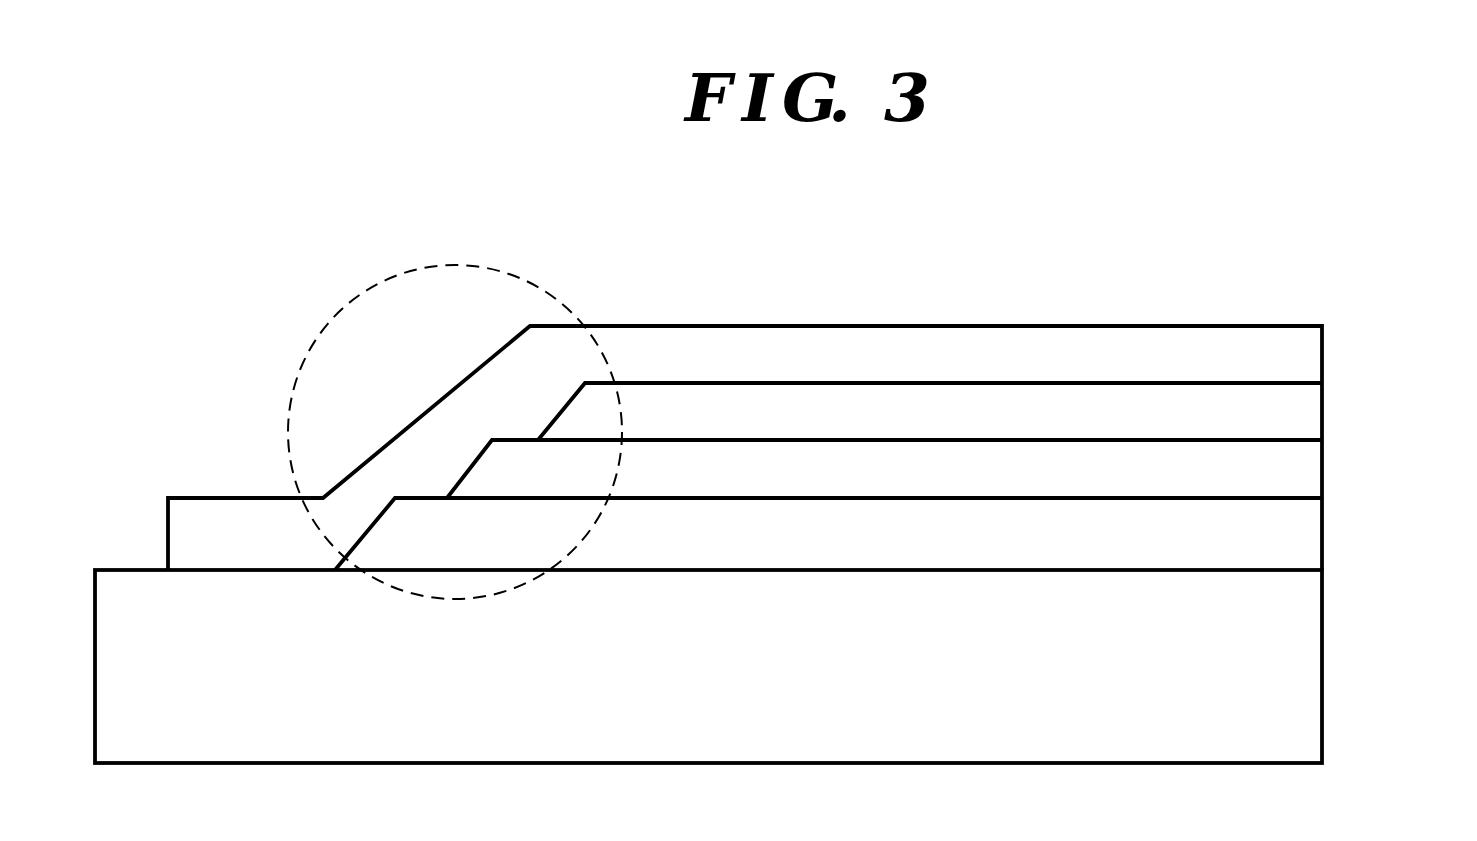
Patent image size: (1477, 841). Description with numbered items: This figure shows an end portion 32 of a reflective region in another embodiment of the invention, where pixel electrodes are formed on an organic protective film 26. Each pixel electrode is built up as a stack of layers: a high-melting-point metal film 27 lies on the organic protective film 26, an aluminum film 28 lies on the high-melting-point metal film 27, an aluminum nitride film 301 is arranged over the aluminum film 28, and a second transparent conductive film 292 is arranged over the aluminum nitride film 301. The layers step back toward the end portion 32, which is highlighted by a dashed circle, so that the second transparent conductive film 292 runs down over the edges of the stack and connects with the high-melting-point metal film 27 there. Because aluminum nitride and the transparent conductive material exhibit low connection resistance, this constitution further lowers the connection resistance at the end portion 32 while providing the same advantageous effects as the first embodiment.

The organic protective film 26 is at (1278, 682).
The high-melting-point metal film 27 is at (1288, 528).
The aluminum film 28 is at (1285, 472).
The aluminum nitride film 301 is at (1288, 415).
The second transparent conductive film 292 is at (1297, 355).
The end portion 32 is at (318, 377).